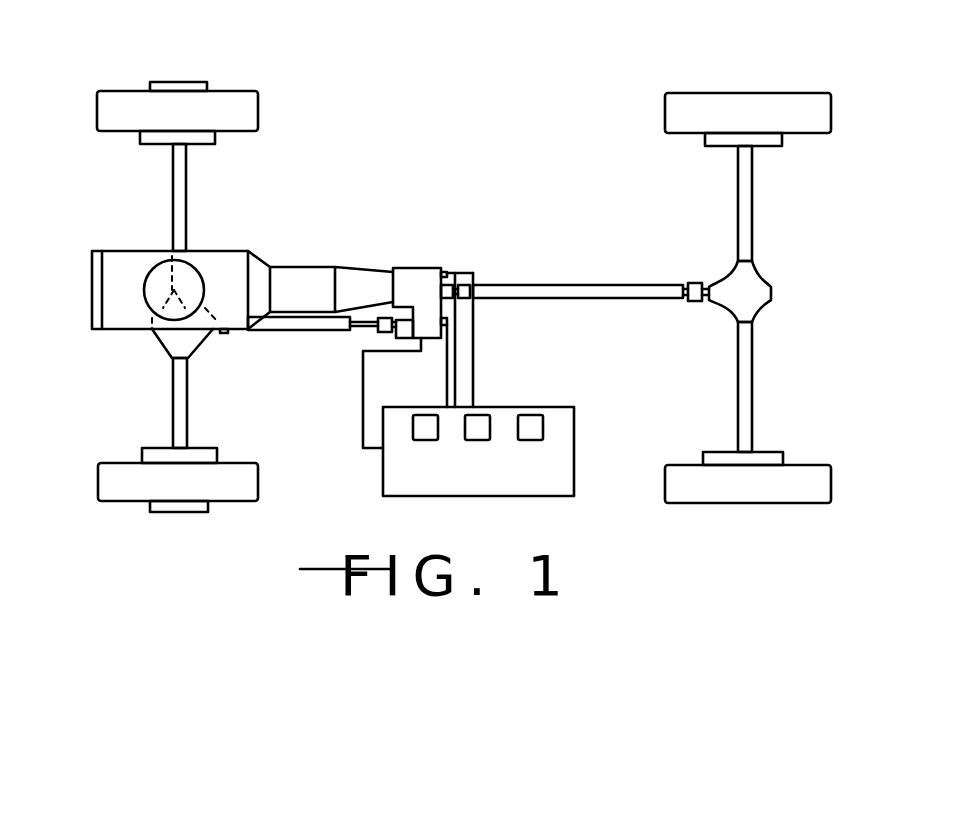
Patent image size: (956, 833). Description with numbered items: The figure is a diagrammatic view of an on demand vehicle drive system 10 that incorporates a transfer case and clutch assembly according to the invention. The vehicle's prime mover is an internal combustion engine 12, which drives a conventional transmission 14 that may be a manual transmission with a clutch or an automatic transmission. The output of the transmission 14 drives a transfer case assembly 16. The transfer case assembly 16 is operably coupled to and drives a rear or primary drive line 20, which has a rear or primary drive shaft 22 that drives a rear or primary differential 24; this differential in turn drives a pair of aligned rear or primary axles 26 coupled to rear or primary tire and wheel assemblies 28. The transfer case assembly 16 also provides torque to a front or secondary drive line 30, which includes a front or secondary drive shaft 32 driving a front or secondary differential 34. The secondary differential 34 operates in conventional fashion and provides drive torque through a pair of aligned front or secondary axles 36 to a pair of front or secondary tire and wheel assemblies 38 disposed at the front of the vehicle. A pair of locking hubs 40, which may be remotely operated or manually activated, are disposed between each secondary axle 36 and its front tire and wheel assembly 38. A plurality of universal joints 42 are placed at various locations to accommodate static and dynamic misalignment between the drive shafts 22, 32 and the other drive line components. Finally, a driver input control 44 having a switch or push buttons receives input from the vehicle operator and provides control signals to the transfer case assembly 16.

The on demand vehicle drive system 10 is at (485, 133).
The internal combustion engine 12 is at (222, 262).
The transmission 14 is at (298, 290).
The transfer case assembly 16 is at (419, 262).
The rear or primary drive line 20 is at (635, 212).
The rear or primary drive shaft 22 is at (588, 300).
The rear or primary differential 24 is at (750, 290).
The rear or primary axles 26 is at (755, 197).
The rear or primary tire and wheel assemblies 28 is at (735, 85).
The front or secondary drive line 30 is at (235, 357).
The front or secondary drive shaft 32 is at (295, 332).
The front or secondary differential 34 is at (162, 350).
The front or secondary axles 36 is at (172, 187).
The front or secondary tire and wheel assemblies 38 is at (227, 80).
The locking hubs 40 is at (167, 82).
The universal joints 42 is at (382, 334).
The driver input control 44 is at (574, 478).